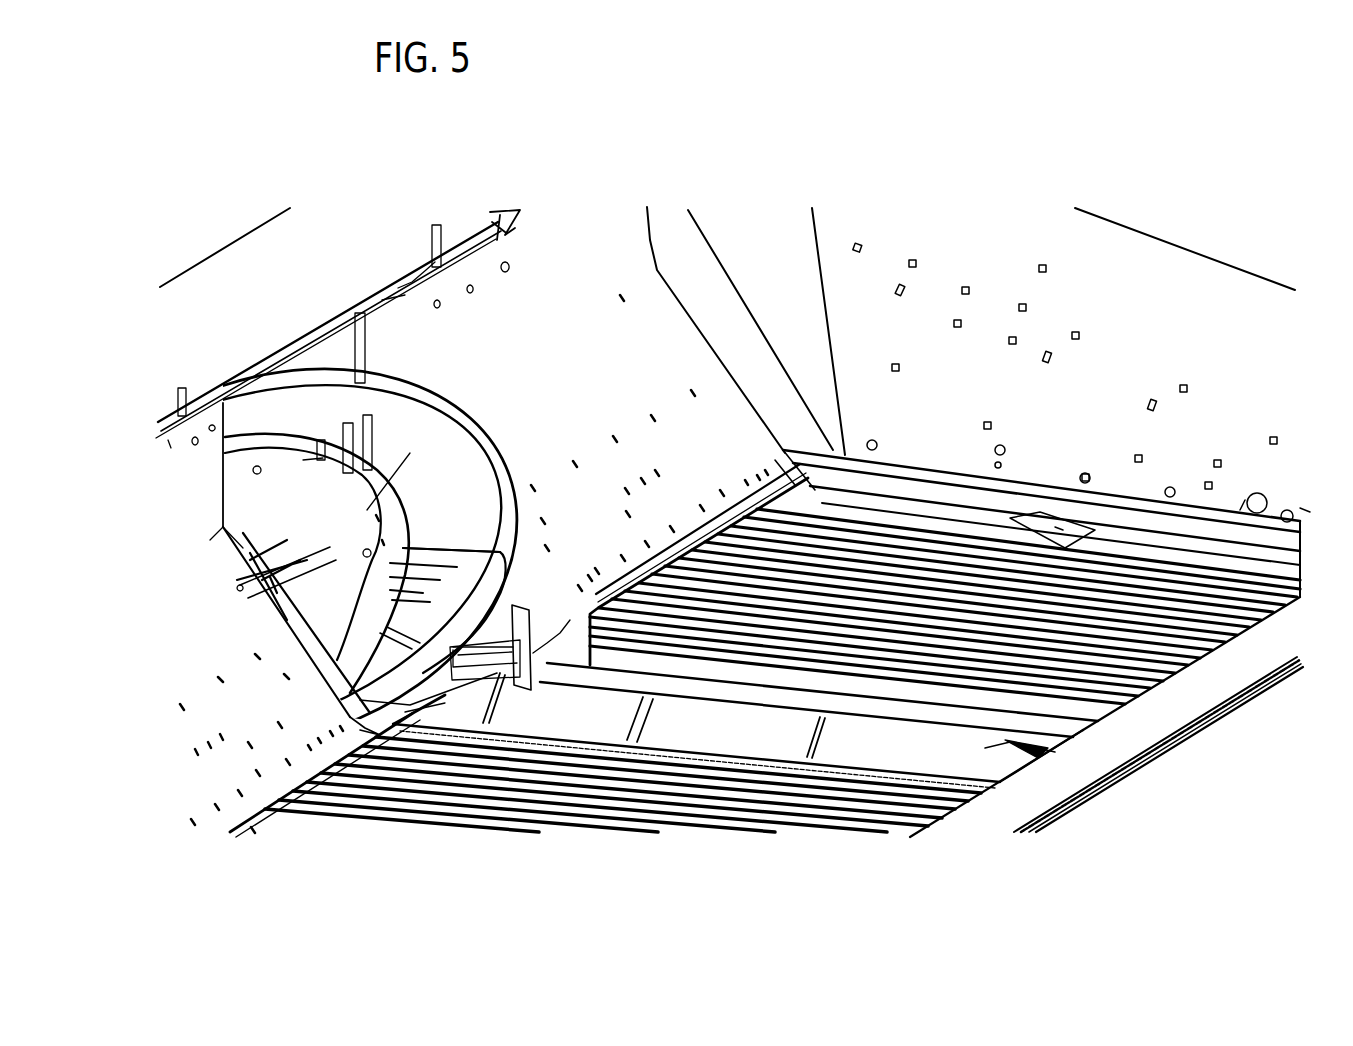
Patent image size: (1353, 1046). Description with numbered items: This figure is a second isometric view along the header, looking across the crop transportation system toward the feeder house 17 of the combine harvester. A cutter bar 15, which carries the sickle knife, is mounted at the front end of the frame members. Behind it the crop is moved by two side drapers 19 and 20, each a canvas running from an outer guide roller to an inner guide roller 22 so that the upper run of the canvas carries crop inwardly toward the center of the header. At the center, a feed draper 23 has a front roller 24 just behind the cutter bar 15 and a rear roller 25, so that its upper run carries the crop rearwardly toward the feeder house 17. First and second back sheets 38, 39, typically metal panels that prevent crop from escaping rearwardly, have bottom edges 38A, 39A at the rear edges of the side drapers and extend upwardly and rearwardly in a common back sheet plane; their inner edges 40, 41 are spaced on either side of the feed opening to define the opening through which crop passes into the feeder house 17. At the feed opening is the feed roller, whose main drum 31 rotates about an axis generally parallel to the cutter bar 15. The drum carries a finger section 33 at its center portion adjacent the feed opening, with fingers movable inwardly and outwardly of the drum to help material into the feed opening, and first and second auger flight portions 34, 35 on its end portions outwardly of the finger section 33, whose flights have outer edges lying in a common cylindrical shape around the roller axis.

The cutter bar 15 is at (1087, 807).
The feeder house 17 is at (190, 284).
The side draper 19 is at (627, 797).
The side draper 20 is at (988, 590).
The inner guide roller 22 is at (524, 730).
The feed draper 23 is at (872, 752).
The front roller 24 is at (1013, 752).
The rear roller 25 is at (405, 712).
The main drum 31 is at (386, 507).
The finger section 33 is at (325, 468).
The first auger flight portion 34 is at (257, 503).
The second auger flight portion 35 is at (415, 393).
The first back sheet 38 is at (218, 656).
The bottom edge 38A is at (272, 793).
The second back sheet 39 is at (733, 247).
The bottom edge 39A is at (717, 497).
The inner edge 40 is at (240, 586).
The inner edge 41 is at (505, 590).